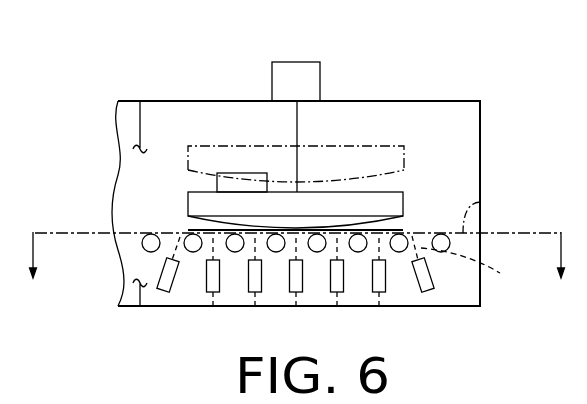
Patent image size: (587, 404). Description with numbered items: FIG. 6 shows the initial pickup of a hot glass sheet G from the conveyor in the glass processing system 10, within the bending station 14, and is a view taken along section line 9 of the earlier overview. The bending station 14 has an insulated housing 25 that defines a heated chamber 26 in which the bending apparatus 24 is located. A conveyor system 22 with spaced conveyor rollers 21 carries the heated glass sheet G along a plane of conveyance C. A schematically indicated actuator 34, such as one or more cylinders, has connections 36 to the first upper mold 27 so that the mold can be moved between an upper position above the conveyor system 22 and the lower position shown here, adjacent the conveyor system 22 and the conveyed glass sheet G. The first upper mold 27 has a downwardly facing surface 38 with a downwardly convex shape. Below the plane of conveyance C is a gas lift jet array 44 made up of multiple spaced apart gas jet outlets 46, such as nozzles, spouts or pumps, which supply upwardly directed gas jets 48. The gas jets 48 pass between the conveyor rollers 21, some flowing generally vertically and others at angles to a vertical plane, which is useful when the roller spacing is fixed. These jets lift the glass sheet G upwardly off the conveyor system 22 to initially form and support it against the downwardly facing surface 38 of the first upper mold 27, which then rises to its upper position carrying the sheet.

The section line 9- 9 is at (297, 275).
The glass processing system 10 is at (137, 64).
The bending station 14 is at (313, 162).
The rollers 21 is at (253, 288).
The conveyor system 22 is at (131, 243).
The bending apparatus 24 is at (335, 129).
The insulated housing 25 is at (177, 101).
The heated chamber 26 is at (403, 110).
The first upper mold 27 is at (406, 220).
The actuator 34 is at (272, 82).
The connections 36 is at (297, 122).
The downwardly facing surface 38 is at (404, 202).
The gas lift jet array 44 is at (448, 284).
The gas jet outlets 46 is at (344, 278).
The gas jets 48 is at (475, 268).
The glass sheet G is at (187, 229).
The plane of conveyance C is at (480, 200).